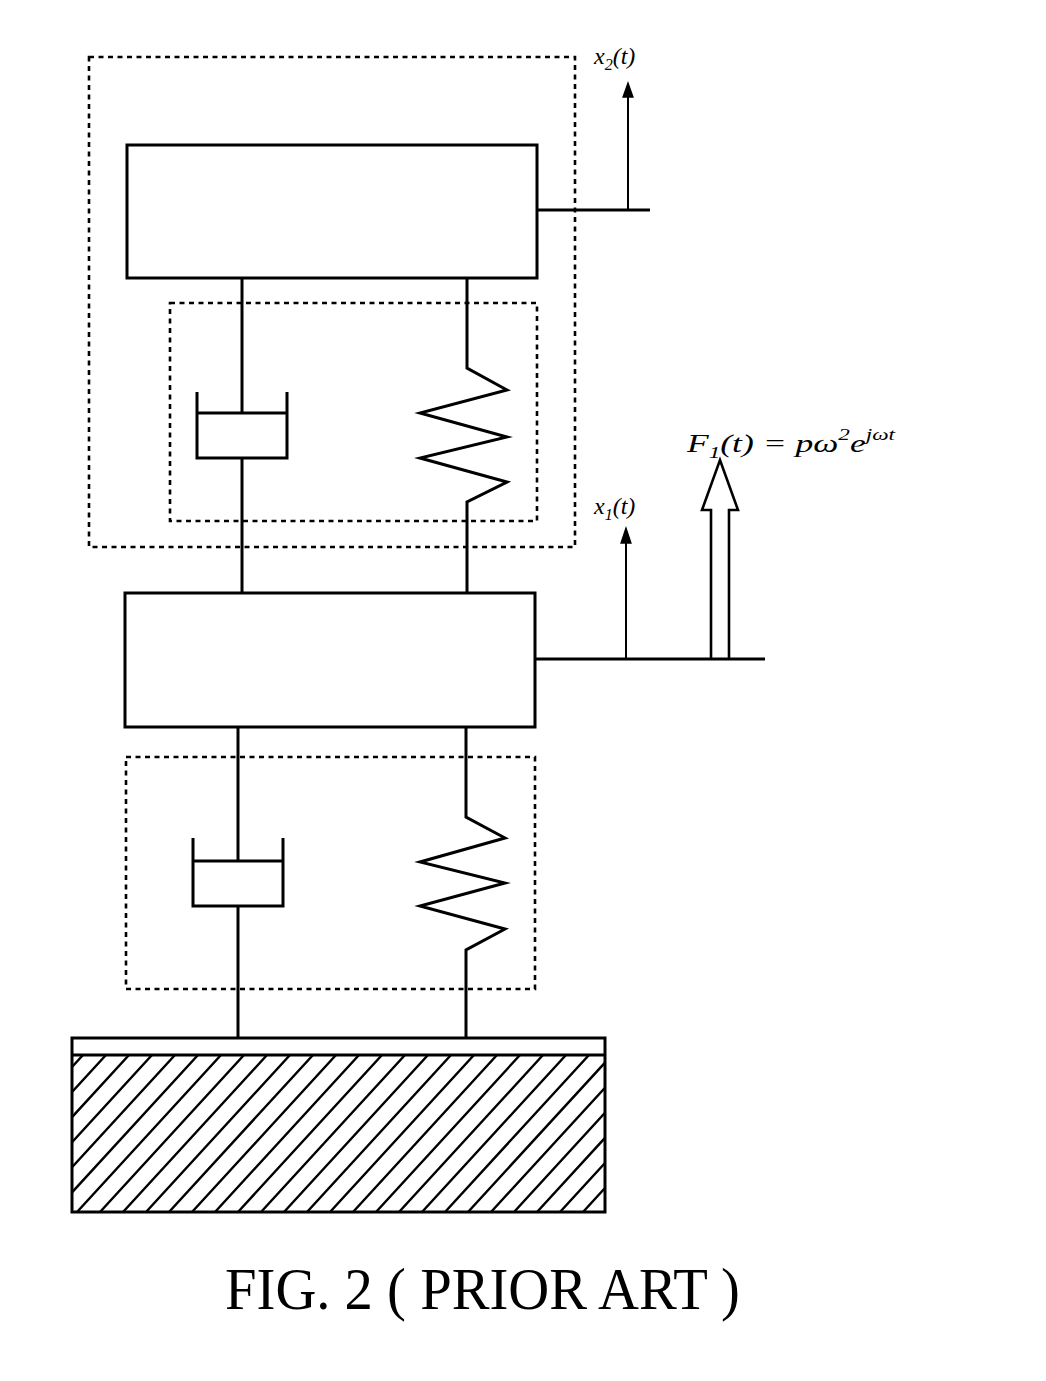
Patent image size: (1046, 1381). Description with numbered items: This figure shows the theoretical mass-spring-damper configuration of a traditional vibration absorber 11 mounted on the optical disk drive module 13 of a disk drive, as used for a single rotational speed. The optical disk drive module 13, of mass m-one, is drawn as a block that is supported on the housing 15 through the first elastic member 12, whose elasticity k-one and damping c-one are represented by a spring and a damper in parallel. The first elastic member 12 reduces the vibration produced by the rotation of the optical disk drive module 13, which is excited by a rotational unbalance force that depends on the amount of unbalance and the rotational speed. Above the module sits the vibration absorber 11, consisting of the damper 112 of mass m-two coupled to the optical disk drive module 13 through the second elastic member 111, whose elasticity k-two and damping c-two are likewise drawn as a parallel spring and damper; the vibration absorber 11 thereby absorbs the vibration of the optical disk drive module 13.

The vibration absorber 11 is at (465, 57).
The damper 112 is at (435, 145).
The second elastic member 111 is at (170, 412).
The optical disk drive module 13 is at (125, 656).
The first elastic member 12 is at (535, 872).
The housing 15 is at (598, 1140).